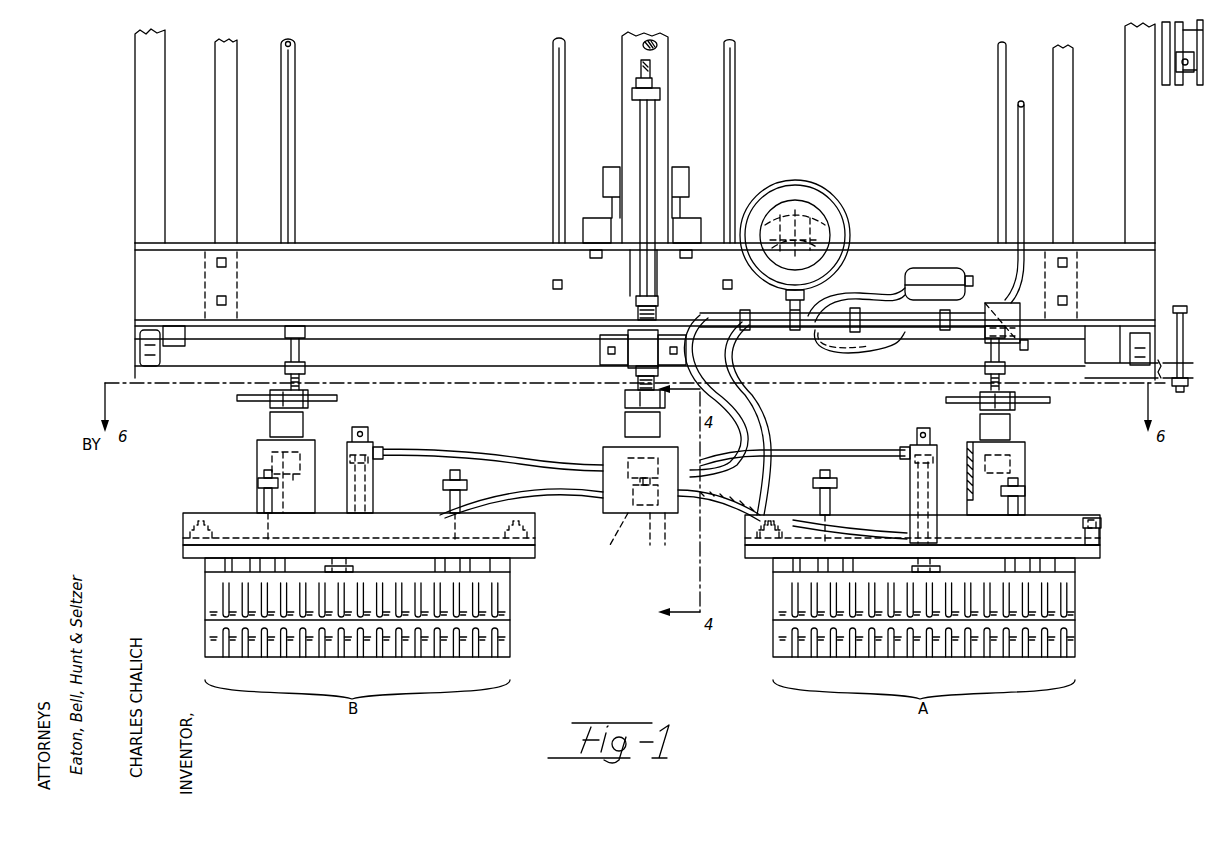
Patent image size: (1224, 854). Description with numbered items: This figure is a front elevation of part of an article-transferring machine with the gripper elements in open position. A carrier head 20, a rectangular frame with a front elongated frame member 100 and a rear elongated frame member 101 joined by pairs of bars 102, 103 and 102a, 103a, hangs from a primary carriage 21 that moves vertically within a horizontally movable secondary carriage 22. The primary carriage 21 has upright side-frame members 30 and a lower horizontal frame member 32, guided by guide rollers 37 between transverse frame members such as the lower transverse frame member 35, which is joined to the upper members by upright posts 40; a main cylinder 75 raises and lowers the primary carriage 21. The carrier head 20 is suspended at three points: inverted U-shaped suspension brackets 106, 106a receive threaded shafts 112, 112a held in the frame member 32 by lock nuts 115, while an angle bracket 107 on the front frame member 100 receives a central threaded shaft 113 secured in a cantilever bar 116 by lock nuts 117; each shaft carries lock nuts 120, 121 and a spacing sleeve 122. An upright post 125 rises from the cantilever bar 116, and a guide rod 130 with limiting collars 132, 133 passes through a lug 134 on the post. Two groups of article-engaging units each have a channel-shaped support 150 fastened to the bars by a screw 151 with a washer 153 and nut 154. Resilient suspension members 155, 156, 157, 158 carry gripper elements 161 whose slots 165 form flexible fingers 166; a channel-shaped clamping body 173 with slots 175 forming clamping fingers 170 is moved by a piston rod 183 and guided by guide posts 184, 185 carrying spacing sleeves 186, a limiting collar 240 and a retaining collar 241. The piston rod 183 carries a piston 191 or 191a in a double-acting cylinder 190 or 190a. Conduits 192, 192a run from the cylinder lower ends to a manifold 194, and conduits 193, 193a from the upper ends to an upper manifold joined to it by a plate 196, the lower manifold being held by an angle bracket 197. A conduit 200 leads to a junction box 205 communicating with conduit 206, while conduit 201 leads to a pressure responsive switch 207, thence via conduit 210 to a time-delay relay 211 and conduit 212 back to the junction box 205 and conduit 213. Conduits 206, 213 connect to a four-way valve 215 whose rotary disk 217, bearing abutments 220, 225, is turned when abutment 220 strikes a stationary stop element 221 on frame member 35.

The carrier head 20 is at (567, 552).
The primary carriage 21 is at (133, 176).
The secondary carriage 22 is at (133, 289).
The upright side-frame members 30 is at (1155, 184).
The lower horizontal frame member 32 is at (437, 342).
The lower transverse frame member 35 is at (484, 243).
The guide rollers 37 is at (1140, 332).
The upright posts 40 is at (1073, 88).
The main cylinder 75 is at (668, 38).
The front elongated frame member 100 is at (663, 559).
The rear elongated frame member 101 is at (1085, 520).
The bar 102 is at (1100, 535).
The bar 102a is at (183, 541).
The bar 103 is at (757, 548).
The bar 103a is at (531, 531).
The suspension bracket 106 is at (1025, 449).
The suspension bracket 106a is at (257, 445).
The angle bracket 107 is at (603, 446).
The threaded shaft 112 is at (1025, 462).
The threaded shaft 112a is at (270, 394).
The central threaded shaft 113 is at (625, 393).
The lock nuts 115 is at (963, 355).
The cantilever bar 116 is at (646, 342).
The lock nuts 117 is at (600, 364).
The lock nut 120 is at (257, 452).
The lock nut 121 is at (1010, 406).
The spacing sleeve 122 is at (1010, 428).
The upright post 125 is at (660, 53).
The guide rod 130 is at (640, 132).
The limiting collar 132 is at (636, 84).
The limiting collar 133 is at (634, 300).
The lug 134 is at (632, 98).
The channel-shaped support 150 is at (1100, 550).
The screw 151 is at (1083, 527).
The washer 153 is at (1103, 530).
The nut 154 is at (1103, 523).
The suspension member 155 is at (510, 566).
The suspension member 156 is at (780, 587).
The suspension member 157 is at (1075, 565).
The suspension member 158 is at (773, 578).
The gripper element 161 is at (1087, 642).
The slots 165 is at (848, 650).
The flexible fingers 166 is at (1036, 650).
The clamping fingers 170 is at (1073, 591).
The clamping body 173 is at (1076, 579).
The slots 175 is at (1073, 603).
The piston rod 183 is at (848, 557).
The guide post 184 is at (1025, 484).
The guide post 185 is at (264, 476).
The spacing sleeve 186 is at (1002, 564).
The cylinder 190 is at (950, 412).
The cylinder 190a is at (371, 439).
The piston 191 is at (915, 468).
The piston 191a is at (373, 468).
The conduit 192 is at (865, 521).
The conduit 192a is at (523, 493).
The conduit 193 is at (860, 450).
The conduit 193a is at (435, 449).
The manifold 194 is at (618, 543).
The plate 196 is at (633, 479).
The angle bracket 197 is at (650, 531).
The conduit 200 is at (767, 490).
The conduit 201 is at (763, 423).
The junction box 205 is at (1023, 309).
The conduit 206 is at (1024, 190).
The pressure responsive switch 207 is at (828, 188).
The conduit 210 is at (828, 332).
The time-delay relay 211 is at (942, 275).
The conduit 212 is at (855, 288).
The conduit 213 is at (1036, 362).
The four-way valve 215 is at (1160, 32).
The rotary disk 217 is at (1175, 54).
The abutment 220 is at (1186, 86).
The stop element 221 is at (1180, 306).
The abutment 225 is at (1200, 88).
The limiting collar 240 is at (264, 496).
The collar 241 is at (1026, 490).